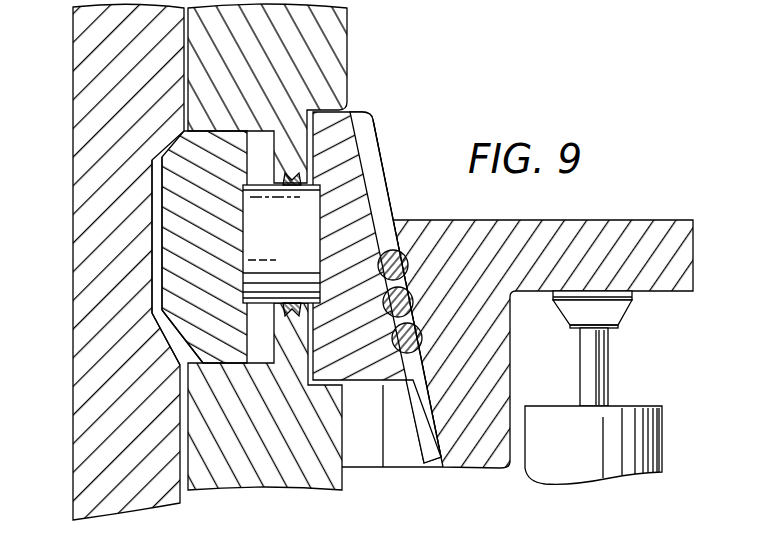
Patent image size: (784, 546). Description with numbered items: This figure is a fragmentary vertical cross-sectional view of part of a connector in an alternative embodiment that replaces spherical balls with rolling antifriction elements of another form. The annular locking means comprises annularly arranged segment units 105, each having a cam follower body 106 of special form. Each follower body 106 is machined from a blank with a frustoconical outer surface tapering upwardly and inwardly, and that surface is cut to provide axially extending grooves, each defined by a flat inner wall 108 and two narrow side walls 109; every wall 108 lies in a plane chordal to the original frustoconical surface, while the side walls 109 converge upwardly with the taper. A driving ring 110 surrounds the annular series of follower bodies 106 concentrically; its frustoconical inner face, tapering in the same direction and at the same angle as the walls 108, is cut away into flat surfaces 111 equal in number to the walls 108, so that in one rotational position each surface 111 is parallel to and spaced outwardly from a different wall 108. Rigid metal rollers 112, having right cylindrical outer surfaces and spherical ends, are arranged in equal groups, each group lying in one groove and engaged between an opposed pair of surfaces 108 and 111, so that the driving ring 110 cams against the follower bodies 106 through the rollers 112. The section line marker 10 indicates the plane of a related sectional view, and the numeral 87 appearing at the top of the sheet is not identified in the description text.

The section line 10- 10 is at (337, 265).
The member 87 is at (630, 14).
The segment unit 105 is at (161, 237).
The cam follower body 106 is at (338, 132).
The flat inner wall 108 is at (352, 128).
The side wall 109 is at (372, 162).
The driving ring 110 is at (672, 221).
The flat surface 111 is at (430, 440).
The roller 112 is at (408, 280).